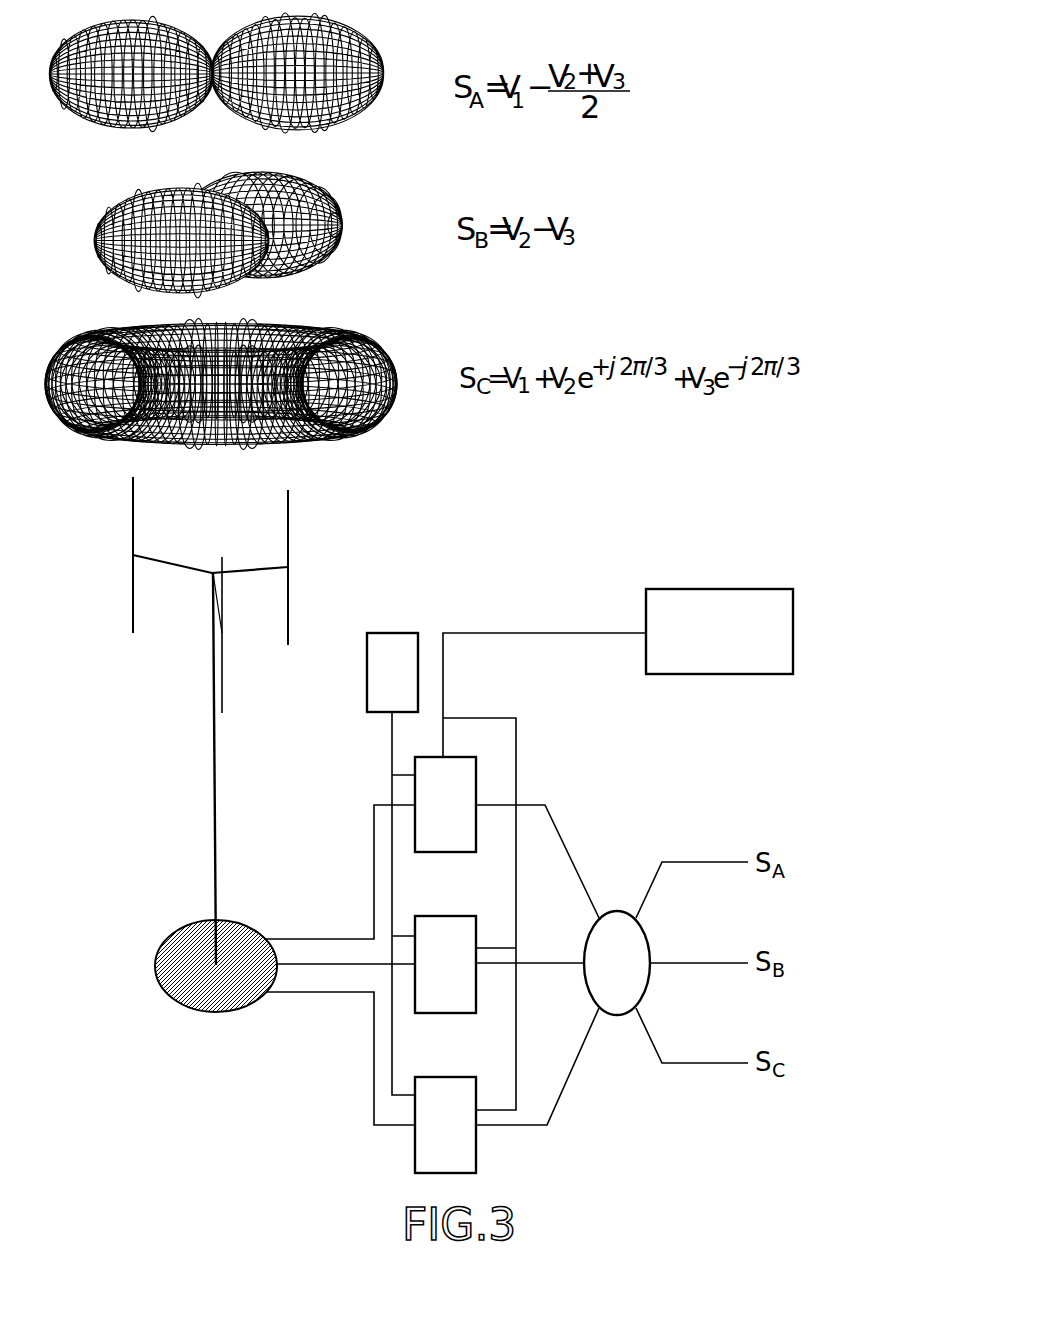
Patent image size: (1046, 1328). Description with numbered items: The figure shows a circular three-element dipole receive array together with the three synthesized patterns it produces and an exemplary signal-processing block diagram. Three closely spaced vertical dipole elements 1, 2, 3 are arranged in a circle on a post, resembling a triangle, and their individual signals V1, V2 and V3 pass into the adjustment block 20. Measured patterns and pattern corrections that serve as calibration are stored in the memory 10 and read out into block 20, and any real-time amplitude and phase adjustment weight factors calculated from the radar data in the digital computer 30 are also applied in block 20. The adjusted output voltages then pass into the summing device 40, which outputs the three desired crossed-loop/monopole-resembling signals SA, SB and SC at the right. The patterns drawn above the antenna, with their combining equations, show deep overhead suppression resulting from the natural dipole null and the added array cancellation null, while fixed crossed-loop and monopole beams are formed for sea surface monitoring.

The first dipole element 1 is at (220, 722).
The second dipole element 2 is at (274, 776).
The third dipole element 3 is at (297, 714).
The memory 10 is at (405, 687).
The adjustment block 20 is at (432, 819).
The digital computer 30 is at (707, 645).
The summing device 40 is at (604, 977).